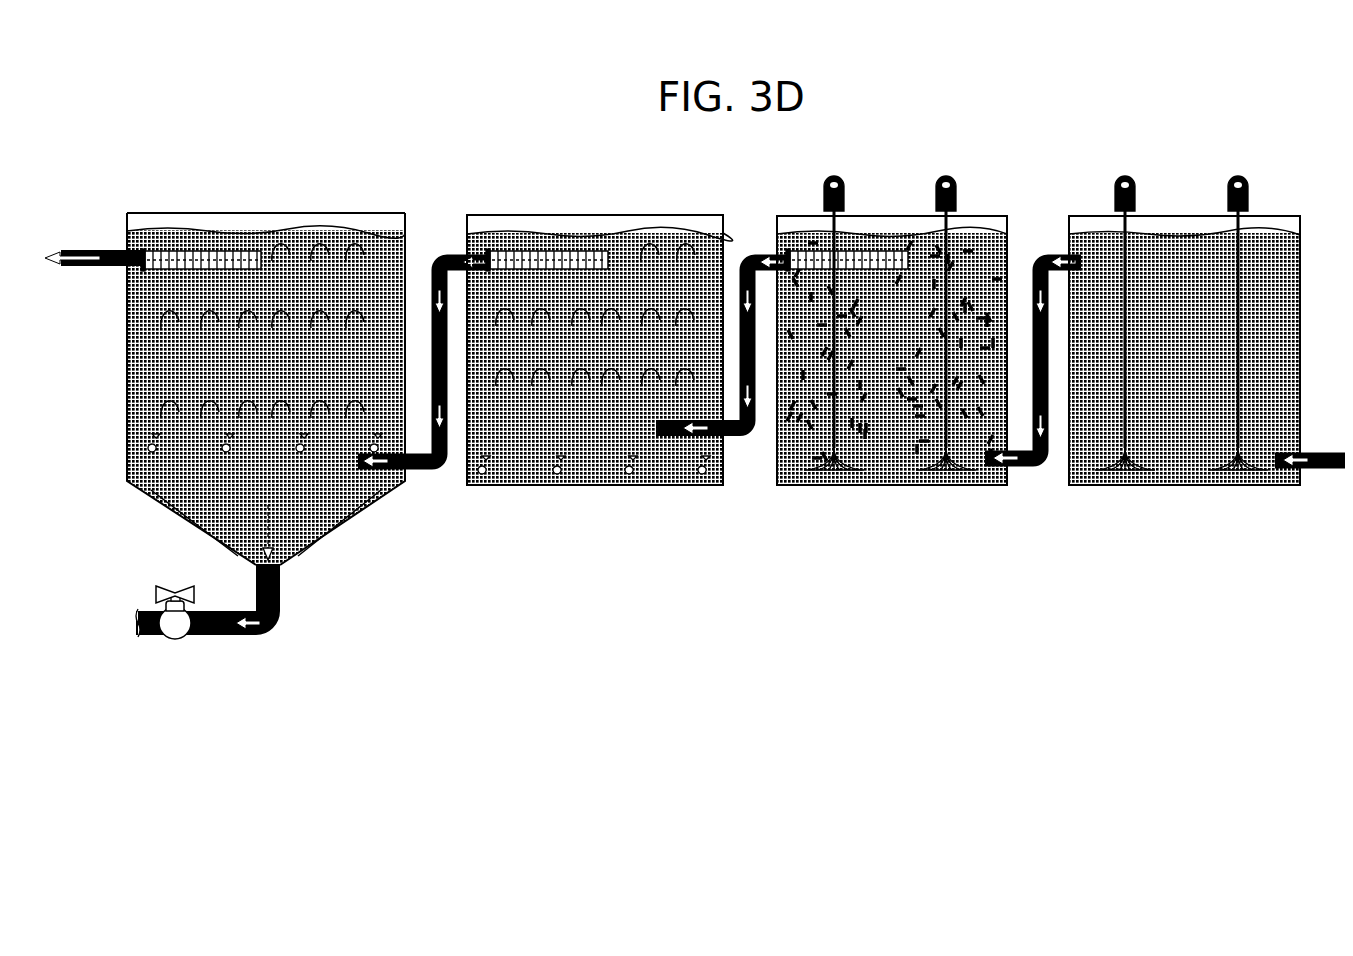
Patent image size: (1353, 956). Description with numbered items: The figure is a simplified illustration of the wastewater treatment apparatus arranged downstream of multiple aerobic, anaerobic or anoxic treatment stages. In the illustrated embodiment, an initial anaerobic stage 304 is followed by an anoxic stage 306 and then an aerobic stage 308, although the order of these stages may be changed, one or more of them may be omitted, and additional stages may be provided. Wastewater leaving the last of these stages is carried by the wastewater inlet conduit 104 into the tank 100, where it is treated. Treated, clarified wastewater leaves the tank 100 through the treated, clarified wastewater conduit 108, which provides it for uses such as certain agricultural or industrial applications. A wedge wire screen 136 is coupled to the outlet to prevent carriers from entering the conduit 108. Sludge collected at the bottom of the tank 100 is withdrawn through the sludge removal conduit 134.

The tank 100 is at (345, 205).
The wedge wire screen 136 is at (207, 242).
The treated, clarified wastewater conduit 108 is at (92, 242).
The wastewater inlet conduit 104 is at (411, 463).
The sludge removal conduit 134 is at (213, 628).
The aerobic stage 308 is at (554, 207).
The anoxic stage 306 is at (974, 208).
The anaerobic stage 304 is at (1259, 208).